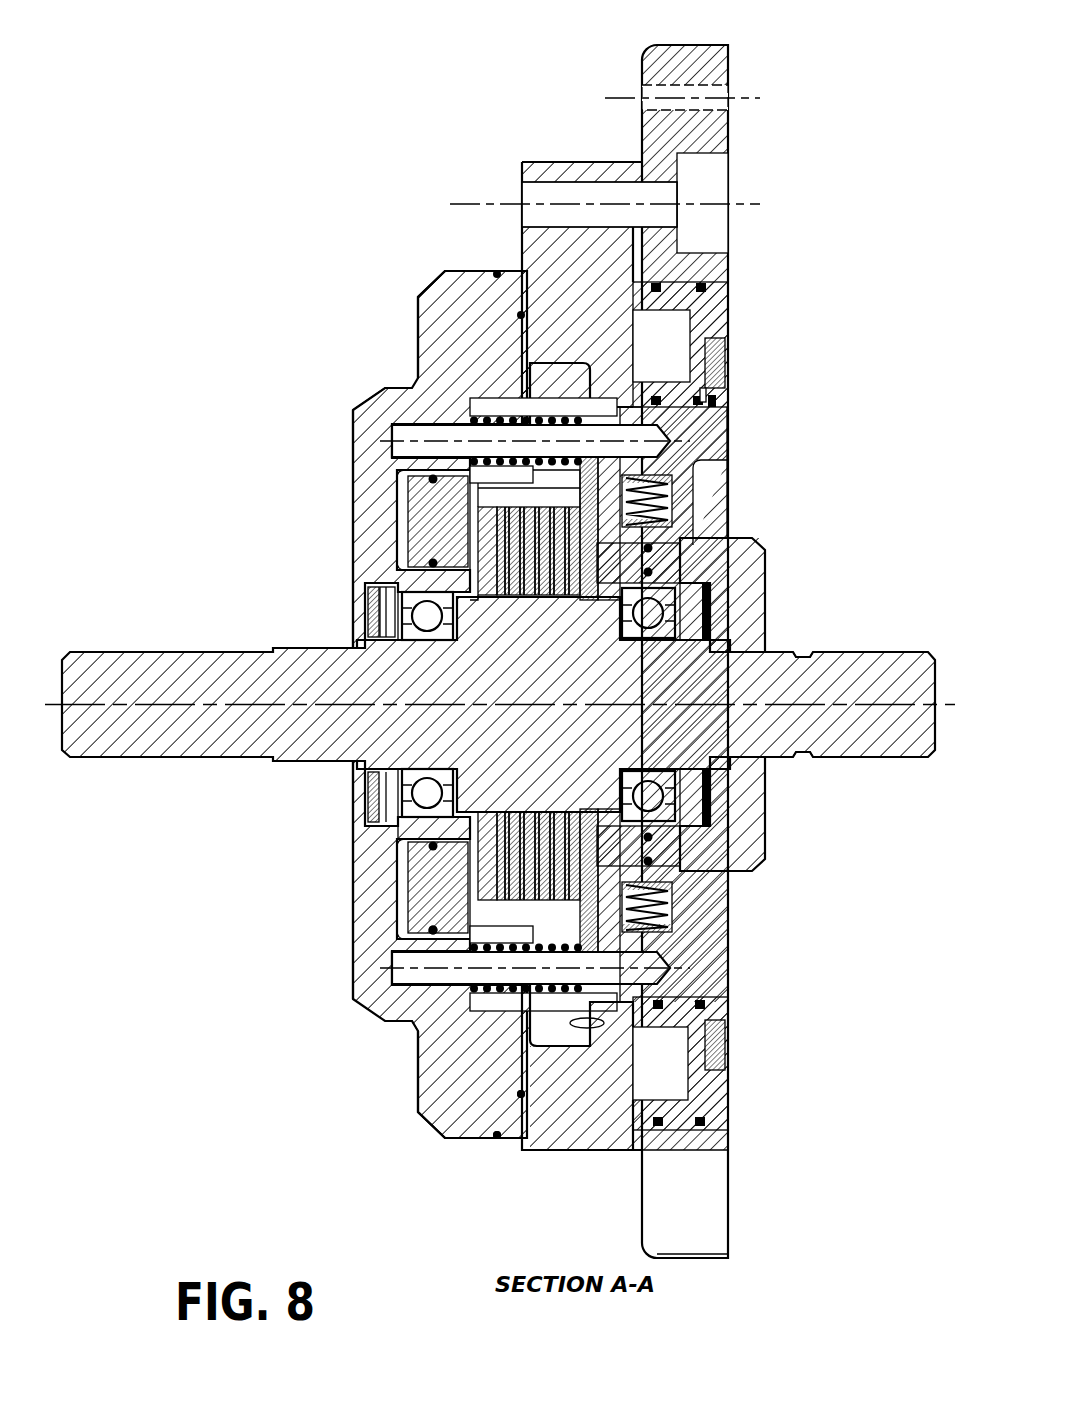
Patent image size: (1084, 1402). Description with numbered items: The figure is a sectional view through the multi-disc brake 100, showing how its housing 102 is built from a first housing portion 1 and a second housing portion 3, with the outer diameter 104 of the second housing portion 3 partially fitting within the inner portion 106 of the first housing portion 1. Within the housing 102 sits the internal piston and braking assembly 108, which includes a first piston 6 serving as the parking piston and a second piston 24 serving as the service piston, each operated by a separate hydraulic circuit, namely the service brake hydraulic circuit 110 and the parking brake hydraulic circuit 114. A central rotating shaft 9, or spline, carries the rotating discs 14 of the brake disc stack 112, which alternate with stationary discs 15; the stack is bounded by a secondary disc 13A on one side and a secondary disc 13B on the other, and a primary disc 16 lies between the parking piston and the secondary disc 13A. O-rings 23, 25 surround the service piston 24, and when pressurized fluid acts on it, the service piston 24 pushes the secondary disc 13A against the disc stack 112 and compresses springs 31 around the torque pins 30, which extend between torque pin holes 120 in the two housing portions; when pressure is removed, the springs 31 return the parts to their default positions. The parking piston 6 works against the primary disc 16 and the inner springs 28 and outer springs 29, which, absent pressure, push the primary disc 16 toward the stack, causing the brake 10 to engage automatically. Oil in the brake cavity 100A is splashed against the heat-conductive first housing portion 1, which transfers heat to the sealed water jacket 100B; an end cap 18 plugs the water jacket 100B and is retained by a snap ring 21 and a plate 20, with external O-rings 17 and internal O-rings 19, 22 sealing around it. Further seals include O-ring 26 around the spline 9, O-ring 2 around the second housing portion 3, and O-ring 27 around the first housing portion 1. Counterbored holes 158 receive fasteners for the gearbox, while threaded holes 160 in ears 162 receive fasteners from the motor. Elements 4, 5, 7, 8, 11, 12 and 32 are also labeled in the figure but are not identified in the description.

The first housing portion 1 is at (577, 1160).
The O-ring 2 is at (490, 1140).
The second housing portion 3 is at (420, 1125).
The piston seal 4 is at (440, 937).
The piston seal 5 is at (433, 933).
The first piston 6 is at (405, 885).
The bearing seal 7 is at (433, 846).
The bearing 8 is at (437, 843).
The rotating shaft 9 is at (222, 762).
The brake 10 is at (350, 627).
The bearing 11 is at (350, 585).
The housing wall 12 is at (525, 785).
The secondary disc 13A is at (600, 505).
The secondary disc 13B is at (480, 498).
The rotating discs 14 is at (500, 500).
The stationary discs 15 is at (520, 495).
The primary disc 16 is at (600, 478).
The O-rings 17 is at (727, 281).
The end cap 18 is at (727, 302).
The O-rings 19 is at (660, 392).
The plate 20 is at (730, 360).
The snap ring 21 is at (727, 390).
The O-rings 22 is at (727, 404).
The O-ring 23 is at (668, 545).
The second piston 24 is at (700, 557).
The O-ring 25 is at (730, 566).
The O-ring 26 is at (808, 762).
The O-ring 27 is at (765, 877).
The inner springs 28 is at (693, 937).
The outer springs 29 is at (680, 975).
The torque pins 30 is at (650, 1000).
The springs 31 is at (593, 997).
The seal 32 is at (537, 1097).
The multi-disc brake 100 is at (244, 228).
The brake cavity 100A is at (543, 1003).
The water jacket 100B is at (643, 283).
The housing 102 is at (343, 392).
The outer diameter 104 is at (458, 272).
The inner portion 106 is at (520, 1098).
The internal piston and braking assembly 108 is at (362, 468).
The service brake hydraulic circuit 110 is at (693, 908).
The brake disc stack 112 is at (372, 612).
The parking brake hydraulic circuit 114 is at (397, 534).
The torque pin holes 120 is at (393, 407).
The counterbored holes 158 is at (672, 218).
The threaded holes 160 is at (722, 98).
The ears 162 is at (695, 46).